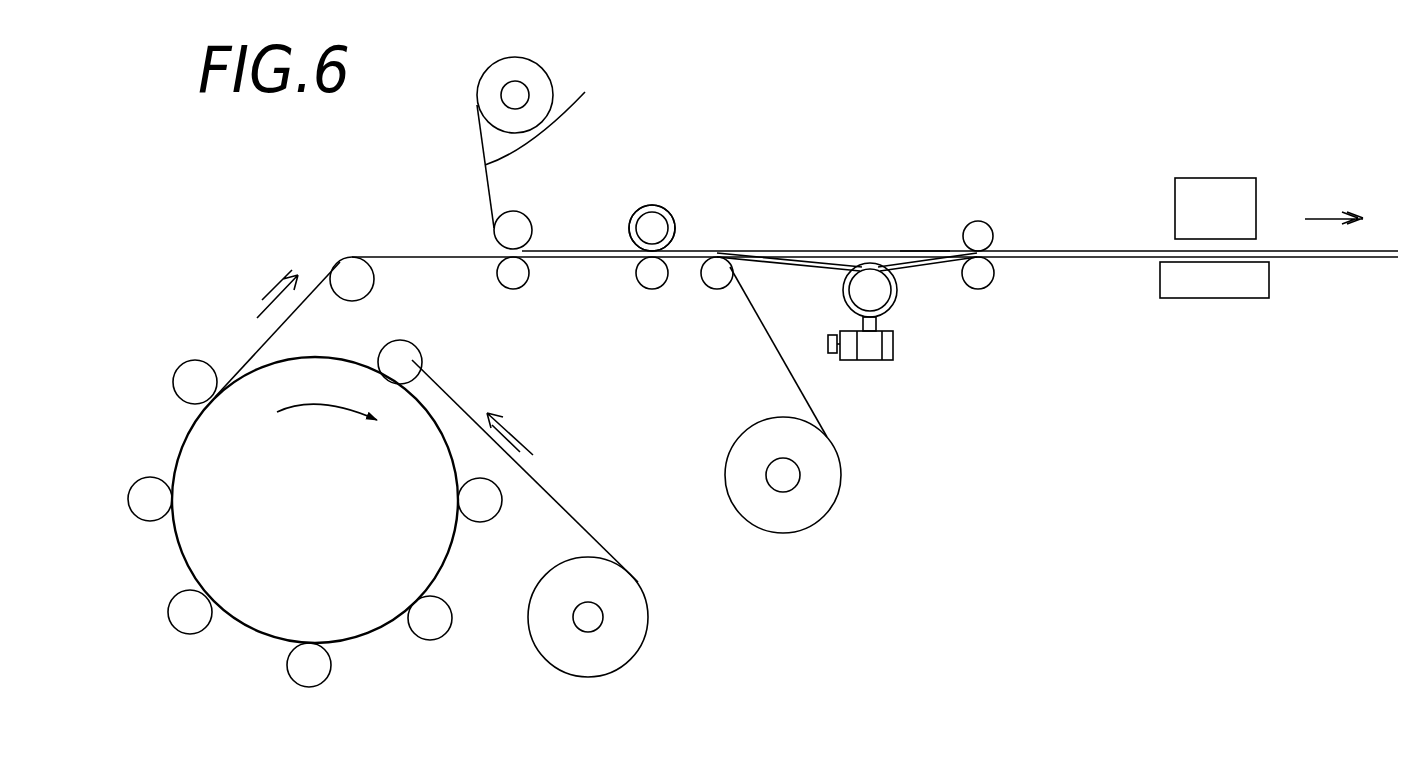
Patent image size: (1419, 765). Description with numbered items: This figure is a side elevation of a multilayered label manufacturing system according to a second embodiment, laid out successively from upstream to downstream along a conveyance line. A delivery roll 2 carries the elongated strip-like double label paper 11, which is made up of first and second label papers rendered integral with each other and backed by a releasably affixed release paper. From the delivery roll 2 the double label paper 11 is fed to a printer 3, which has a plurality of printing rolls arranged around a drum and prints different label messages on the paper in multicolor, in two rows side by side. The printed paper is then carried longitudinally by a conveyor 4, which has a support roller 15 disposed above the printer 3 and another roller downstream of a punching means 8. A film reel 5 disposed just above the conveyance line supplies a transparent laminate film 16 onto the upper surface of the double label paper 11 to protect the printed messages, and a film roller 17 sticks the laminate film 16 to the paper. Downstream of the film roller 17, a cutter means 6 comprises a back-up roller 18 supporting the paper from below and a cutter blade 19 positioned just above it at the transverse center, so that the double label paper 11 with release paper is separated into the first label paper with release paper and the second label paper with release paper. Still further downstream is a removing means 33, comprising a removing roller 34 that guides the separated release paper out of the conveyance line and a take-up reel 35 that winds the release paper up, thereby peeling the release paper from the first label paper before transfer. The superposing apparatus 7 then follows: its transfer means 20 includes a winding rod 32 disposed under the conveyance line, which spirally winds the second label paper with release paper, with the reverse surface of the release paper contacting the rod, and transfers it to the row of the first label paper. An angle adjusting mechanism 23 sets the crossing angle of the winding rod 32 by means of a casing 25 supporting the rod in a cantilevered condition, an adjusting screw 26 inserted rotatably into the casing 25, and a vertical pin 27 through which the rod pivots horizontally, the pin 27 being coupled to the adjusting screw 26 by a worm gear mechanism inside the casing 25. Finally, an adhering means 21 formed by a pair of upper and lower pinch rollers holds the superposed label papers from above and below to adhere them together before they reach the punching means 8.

The delivery roll 2 is at (597, 617).
The printer 3 is at (180, 437).
The conveyor 4 is at (417, 250).
The film reel 5 is at (508, 96).
The cutter means 6 is at (633, 206).
The superposing apparatus 7 is at (915, 236).
The punching means 8 is at (1243, 207).
The double label paper 11 is at (577, 523).
The support roller 15 is at (350, 268).
The laminate film 16 is at (552, 90).
The film roller 17 is at (518, 222).
The back-up roller 18 is at (645, 283).
The cutter blade 19 is at (665, 205).
The transfer means 20 is at (828, 238).
The adhering means 21 is at (980, 232).
The angle adjusting mechanism 23 is at (893, 381).
The casing 25 is at (893, 360).
The adjusting screw 26 is at (825, 355).
The vertical pin 27 is at (876, 324).
The winding rod 32 is at (872, 283).
The removing means 33 is at (783, 368).
The removing roller 34 is at (713, 258).
The take-up reel 35 is at (798, 480).